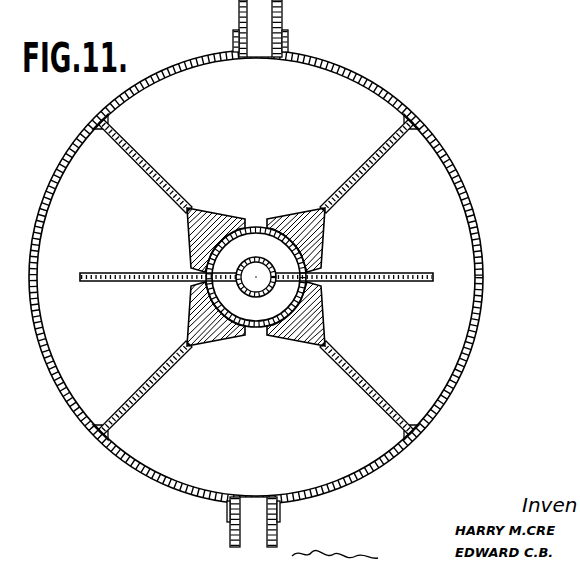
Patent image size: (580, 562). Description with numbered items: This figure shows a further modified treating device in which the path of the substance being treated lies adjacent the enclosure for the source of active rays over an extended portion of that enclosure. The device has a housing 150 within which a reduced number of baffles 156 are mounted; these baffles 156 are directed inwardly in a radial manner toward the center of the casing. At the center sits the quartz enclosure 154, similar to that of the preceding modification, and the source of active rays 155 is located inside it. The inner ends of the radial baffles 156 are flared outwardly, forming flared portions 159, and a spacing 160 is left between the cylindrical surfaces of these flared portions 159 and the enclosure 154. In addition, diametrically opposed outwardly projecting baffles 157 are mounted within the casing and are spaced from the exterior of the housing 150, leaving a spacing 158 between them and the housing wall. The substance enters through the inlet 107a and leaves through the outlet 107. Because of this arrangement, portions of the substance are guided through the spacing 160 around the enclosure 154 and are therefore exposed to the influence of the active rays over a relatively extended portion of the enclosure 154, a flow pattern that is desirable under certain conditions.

The outlet 107 is at (265, 22).
The inlet 107a is at (252, 522).
The housing 150 is at (360, 88).
The quartz enclosure 154 is at (253, 229).
The source of active rays 155 is at (255, 297).
The baffles 156 is at (385, 157).
The outwardly projecting baffles 157 is at (398, 277).
The spacing 158 is at (455, 279).
The flared portions 159 is at (323, 230).
The spacing 160 is at (300, 258).